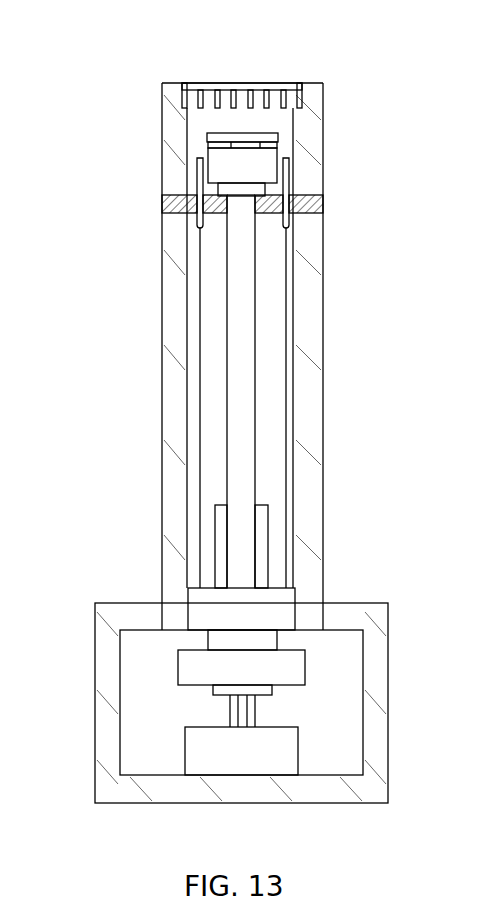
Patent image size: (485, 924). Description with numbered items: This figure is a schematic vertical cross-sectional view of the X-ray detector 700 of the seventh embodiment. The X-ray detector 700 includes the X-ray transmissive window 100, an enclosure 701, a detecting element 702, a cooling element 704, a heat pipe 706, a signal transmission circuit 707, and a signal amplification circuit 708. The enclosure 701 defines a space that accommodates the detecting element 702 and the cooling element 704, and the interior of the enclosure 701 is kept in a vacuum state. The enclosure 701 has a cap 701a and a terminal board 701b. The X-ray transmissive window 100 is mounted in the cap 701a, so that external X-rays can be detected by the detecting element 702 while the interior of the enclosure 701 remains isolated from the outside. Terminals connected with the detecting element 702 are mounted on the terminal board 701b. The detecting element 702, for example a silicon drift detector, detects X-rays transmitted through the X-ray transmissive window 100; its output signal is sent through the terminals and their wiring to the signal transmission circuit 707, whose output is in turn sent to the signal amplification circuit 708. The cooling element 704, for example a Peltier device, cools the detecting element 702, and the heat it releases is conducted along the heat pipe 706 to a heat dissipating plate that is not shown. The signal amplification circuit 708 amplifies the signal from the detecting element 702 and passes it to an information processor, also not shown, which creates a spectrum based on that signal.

The X-ray detector 700 is at (394, 61).
The X-ray transmissive window 100 is at (307, 97).
The enclosure 701 is at (405, 123).
The cap 701a is at (307, 143).
The terminal board 701b is at (325, 205).
The detecting element 702 is at (210, 137).
The cooling element 704 is at (213, 170).
The heat pipe 706 is at (238, 262).
The signal transmission circuit 707 is at (188, 670).
The signal amplification circuit 708 is at (200, 752).